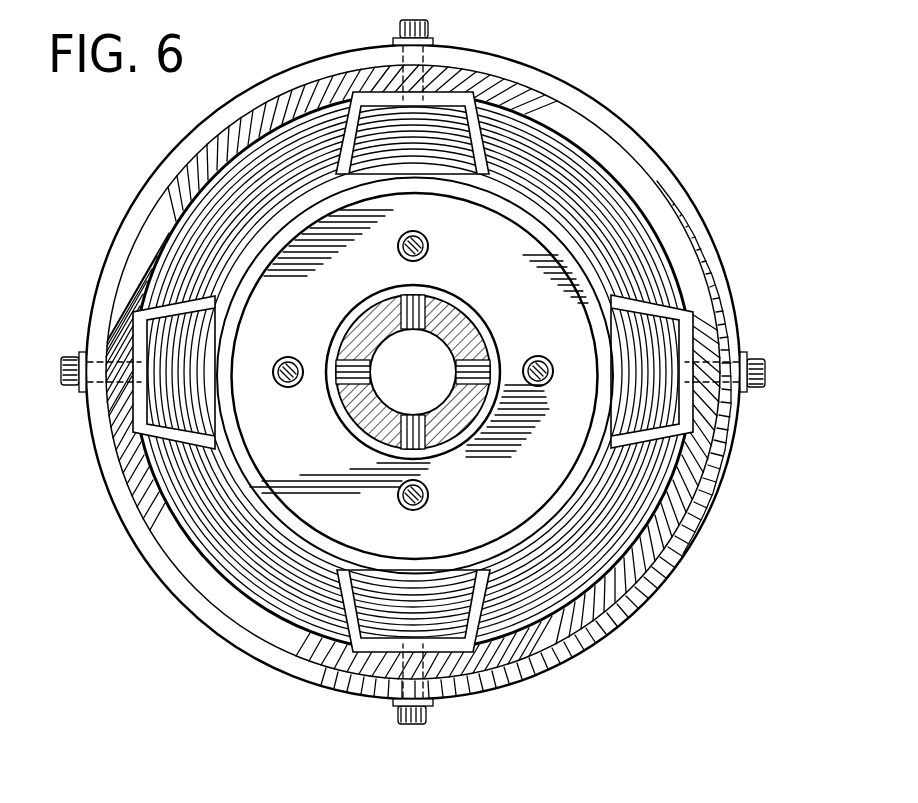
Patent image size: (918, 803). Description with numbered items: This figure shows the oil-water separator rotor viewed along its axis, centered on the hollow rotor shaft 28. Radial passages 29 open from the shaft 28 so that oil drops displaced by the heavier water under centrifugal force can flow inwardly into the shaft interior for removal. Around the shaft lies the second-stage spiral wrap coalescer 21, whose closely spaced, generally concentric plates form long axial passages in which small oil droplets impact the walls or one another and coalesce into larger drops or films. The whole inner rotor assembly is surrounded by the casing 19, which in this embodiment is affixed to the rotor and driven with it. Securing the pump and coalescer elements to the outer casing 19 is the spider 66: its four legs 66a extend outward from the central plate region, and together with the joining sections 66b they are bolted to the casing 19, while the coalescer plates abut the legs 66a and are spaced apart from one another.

The casing 19 is at (690, 240).
The spiral wrap coalescer 21 is at (640, 175).
The rotor shaft 28 is at (467, 325).
The radial passages 29 is at (418, 324).
The spider 66 is at (497, 500).
The legs of the spider 66a is at (352, 140).
The joining sections 66b is at (440, 93).